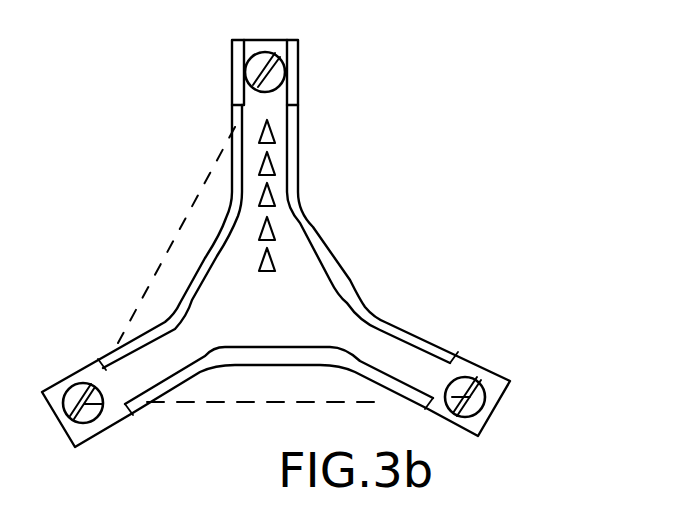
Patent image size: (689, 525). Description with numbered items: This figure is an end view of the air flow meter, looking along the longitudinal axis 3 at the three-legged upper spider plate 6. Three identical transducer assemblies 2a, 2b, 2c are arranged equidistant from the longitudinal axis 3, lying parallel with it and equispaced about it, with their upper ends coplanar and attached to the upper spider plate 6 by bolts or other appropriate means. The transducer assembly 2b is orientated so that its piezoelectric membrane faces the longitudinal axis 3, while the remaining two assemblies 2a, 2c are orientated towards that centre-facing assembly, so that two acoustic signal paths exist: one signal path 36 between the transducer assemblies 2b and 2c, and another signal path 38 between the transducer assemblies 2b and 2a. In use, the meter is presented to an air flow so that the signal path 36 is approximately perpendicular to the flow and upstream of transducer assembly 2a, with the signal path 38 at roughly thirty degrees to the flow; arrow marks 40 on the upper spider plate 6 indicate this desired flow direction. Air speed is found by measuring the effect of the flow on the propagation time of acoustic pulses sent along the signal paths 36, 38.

The transducer assembly 2a is at (285, 57).
The transducer assembly 2b is at (88, 433).
The transducer assembly 2c is at (487, 372).
The longitudinal axis 3 is at (268, 290).
The upper spider plate 6 is at (235, 262).
The signal path 36 is at (243, 410).
The signal path 38 is at (140, 284).
The arrow marks 40 is at (265, 200).